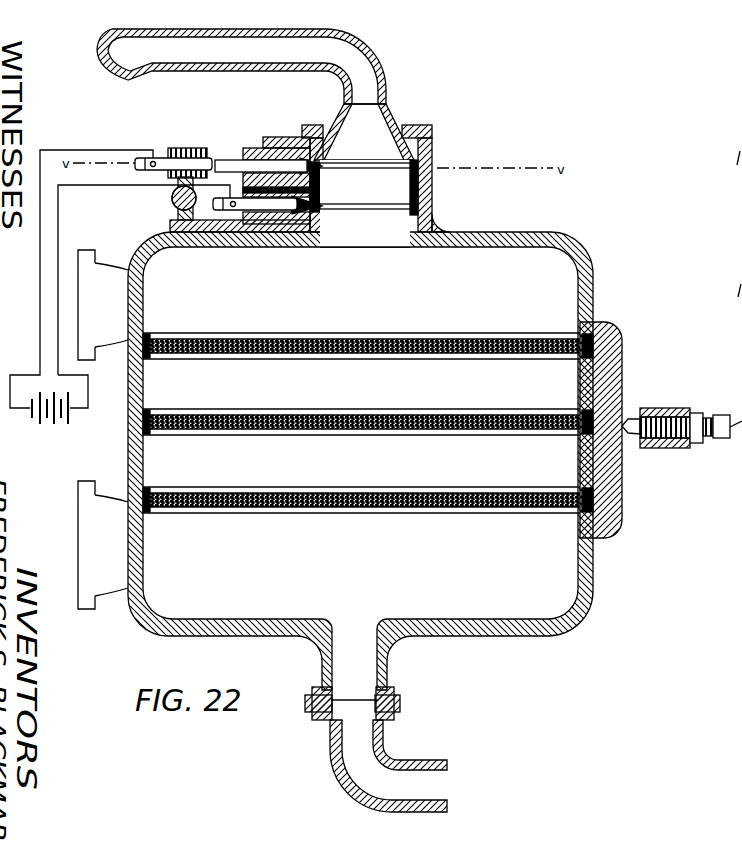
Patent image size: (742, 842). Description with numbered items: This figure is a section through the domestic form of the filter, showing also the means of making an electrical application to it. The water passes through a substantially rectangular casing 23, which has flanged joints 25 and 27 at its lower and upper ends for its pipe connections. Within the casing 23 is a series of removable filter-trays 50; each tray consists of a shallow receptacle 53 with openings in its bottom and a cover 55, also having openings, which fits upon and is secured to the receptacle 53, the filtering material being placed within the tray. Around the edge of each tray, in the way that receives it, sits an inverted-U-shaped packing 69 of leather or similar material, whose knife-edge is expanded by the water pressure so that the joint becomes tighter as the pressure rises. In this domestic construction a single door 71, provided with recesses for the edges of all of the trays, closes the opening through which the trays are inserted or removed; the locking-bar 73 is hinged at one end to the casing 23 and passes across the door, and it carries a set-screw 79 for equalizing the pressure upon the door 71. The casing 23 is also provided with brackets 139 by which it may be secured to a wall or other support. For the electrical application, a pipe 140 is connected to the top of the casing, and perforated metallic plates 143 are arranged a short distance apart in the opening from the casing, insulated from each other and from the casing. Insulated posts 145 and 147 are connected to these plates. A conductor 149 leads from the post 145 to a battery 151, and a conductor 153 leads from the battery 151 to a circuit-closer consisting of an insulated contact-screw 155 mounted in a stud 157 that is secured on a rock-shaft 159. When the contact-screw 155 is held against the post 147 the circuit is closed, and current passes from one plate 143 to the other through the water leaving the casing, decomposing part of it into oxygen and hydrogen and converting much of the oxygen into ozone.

The casing 23 is at (594, 273).
The flanged joint 25 is at (370, 666).
The flanged joint 27 is at (437, 223).
The filter-tray 50 is at (368, 493).
The receptacle 53 is at (478, 502).
The cover 55 is at (410, 493).
The packing 69 is at (588, 505).
The door 71 is at (617, 385).
The bar 73 is at (675, 413).
The set-screw 79 is at (718, 415).
The brackets 139 is at (103, 429).
The pipe 140 is at (372, 63).
The perforated metallic plates 143 is at (357, 204).
The insulated post 145 is at (237, 212).
The insulated post 147 is at (230, 160).
The conductor 149 is at (103, 186).
The battery 151 is at (80, 410).
The conductor 153 is at (41, 333).
The contact-screw 155 is at (160, 158).
The stud 157 is at (172, 207).
The rock-shaft 159 is at (181, 228).